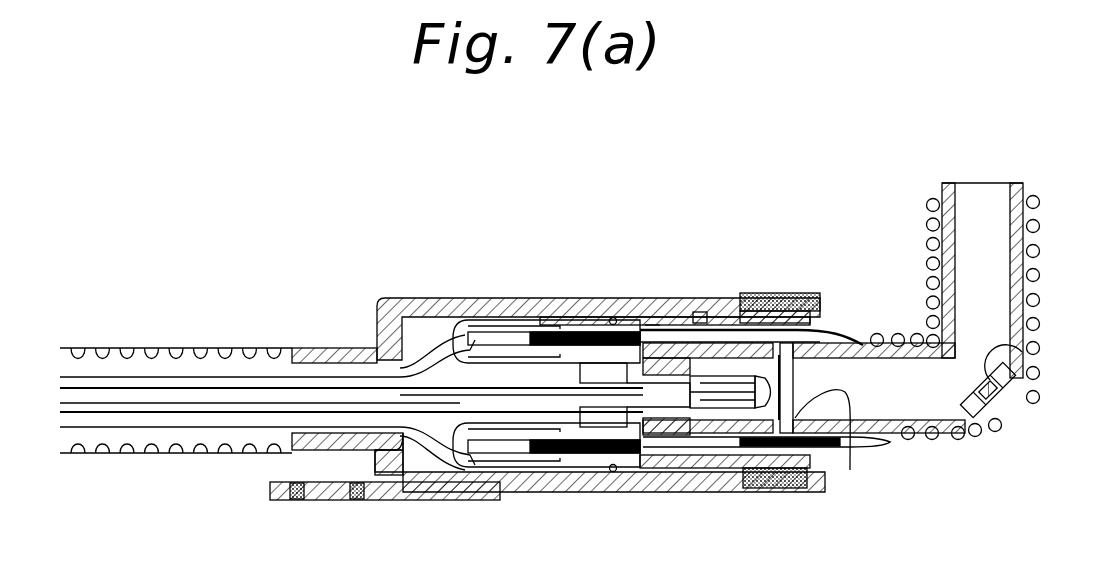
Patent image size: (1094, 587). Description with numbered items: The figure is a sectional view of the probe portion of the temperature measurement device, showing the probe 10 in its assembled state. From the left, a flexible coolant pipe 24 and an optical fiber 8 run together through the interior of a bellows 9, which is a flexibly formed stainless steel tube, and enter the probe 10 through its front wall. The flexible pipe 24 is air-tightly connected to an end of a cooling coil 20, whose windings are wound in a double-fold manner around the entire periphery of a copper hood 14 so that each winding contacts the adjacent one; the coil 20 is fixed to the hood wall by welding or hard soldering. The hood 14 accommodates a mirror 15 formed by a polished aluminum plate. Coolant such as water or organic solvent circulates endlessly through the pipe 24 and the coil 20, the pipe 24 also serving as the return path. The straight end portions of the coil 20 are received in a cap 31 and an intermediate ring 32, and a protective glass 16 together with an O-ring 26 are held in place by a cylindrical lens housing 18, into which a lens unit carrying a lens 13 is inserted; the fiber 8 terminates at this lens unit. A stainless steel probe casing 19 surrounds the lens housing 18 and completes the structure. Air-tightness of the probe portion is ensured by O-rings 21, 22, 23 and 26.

The optical fiber 8 is at (630, 450).
The bellows 9 is at (167, 349).
The probe 10 is at (668, 230).
The lens 13 is at (727, 440).
The hood 14 is at (942, 190).
The mirror 15 is at (1022, 345).
The protective glass 16 is at (847, 448).
The cylindrical lens housing 18 is at (767, 490).
The probe casing 19 is at (677, 492).
The cooling coil 20 is at (1034, 197).
The O-ring 21 is at (563, 330).
The O-ring 22 is at (612, 325).
The O-ring 23 is at (655, 330).
The flexible coolant pipe 24 is at (265, 378).
The O-ring 26 is at (786, 340).
The cap 31 is at (810, 294).
The intermediate ring 32 is at (802, 488).